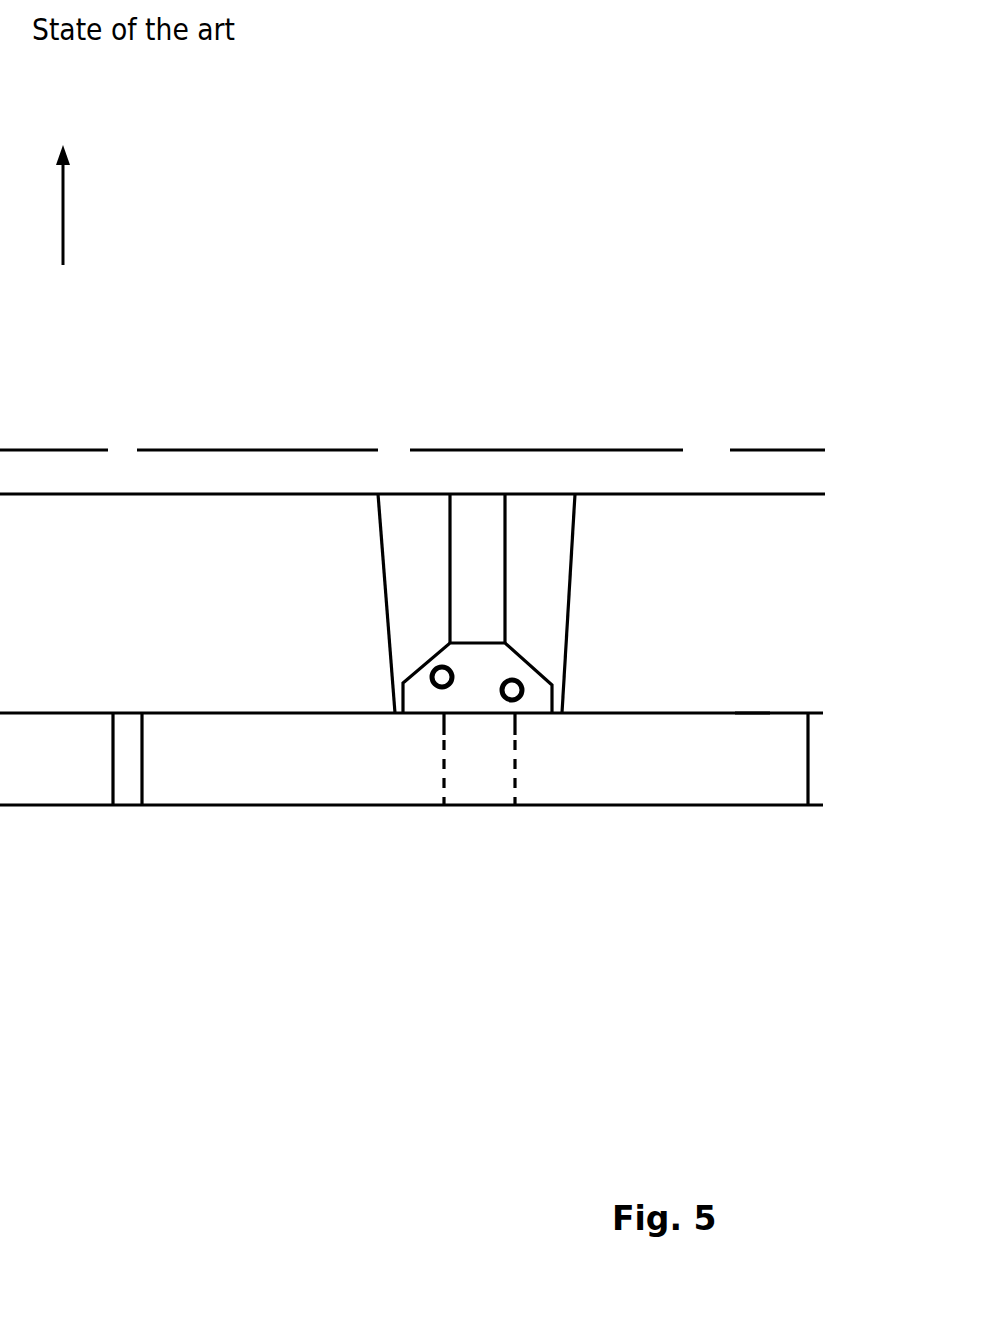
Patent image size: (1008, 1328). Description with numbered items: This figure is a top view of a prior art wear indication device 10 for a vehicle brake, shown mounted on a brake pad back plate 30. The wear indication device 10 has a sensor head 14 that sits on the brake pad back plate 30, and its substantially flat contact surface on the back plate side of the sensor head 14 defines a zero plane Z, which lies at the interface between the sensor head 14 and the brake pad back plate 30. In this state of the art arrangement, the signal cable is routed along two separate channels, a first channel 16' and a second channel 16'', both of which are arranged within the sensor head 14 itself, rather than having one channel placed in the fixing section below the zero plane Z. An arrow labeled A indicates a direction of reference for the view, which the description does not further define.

The wear indication device 10 is at (595, 647).
The sensor head 14 is at (492, 660).
The first channel 16' is at (445, 455).
The second channel 16'' is at (596, 461).
The brake pad back plate 30 is at (397, 772).
The zero plane Z is at (750, 712).
The direction A is at (51, 205).